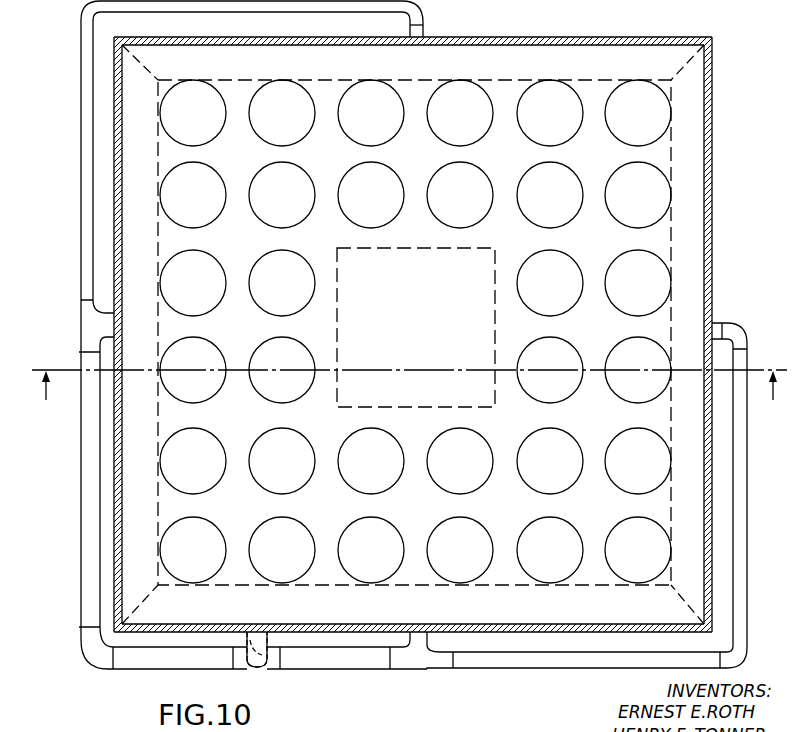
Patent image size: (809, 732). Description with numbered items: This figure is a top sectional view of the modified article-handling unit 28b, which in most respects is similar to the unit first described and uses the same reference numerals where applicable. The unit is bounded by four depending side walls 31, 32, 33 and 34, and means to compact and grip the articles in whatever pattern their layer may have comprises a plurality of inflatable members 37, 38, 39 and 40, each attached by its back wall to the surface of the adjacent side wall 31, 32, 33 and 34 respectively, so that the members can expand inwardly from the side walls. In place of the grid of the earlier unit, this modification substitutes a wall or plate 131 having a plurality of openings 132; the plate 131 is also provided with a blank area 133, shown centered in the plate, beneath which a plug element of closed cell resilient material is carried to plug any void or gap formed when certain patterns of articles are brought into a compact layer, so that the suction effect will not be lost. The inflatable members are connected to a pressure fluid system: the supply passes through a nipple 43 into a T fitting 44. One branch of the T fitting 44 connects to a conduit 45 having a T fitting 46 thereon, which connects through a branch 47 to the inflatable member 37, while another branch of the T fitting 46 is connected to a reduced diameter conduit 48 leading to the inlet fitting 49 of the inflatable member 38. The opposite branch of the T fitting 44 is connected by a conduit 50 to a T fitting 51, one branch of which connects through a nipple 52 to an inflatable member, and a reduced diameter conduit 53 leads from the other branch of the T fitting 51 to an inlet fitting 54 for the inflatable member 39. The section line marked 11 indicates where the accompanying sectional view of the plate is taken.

The modified unit 28b is at (748, 118).
The depending side wall 33 is at (547, 38).
The depending side wall 32 is at (712, 253).
The inflatable member 38 is at (688, 212).
The inflatable member 39 is at (606, 37).
The inflatable member 40 is at (135, 470).
The inflatable member 37 is at (530, 600).
The blank area 133 is at (363, 244).
The openings 132 is at (528, 173).
The plate 131 is at (598, 431).
The section line 11- 11 is at (410, 398).
The reduced diameter conduit 53 is at (81, 88).
The depending side wall 34 is at (92, 163).
The inlet fitting 54 is at (424, 33).
The nipple 52 is at (105, 316).
The T fitting 51 is at (86, 329).
The conduit 50 is at (137, 660).
The T fitting 44 is at (242, 662).
The nipple 43 is at (262, 668).
The conduit 45 is at (351, 662).
The branch 47 is at (425, 641).
The T fitting 46 is at (427, 667).
The depending side wall 31 is at (538, 650).
The reduced diameter conduit 48 is at (748, 541).
The inlet fitting 49 is at (737, 337).